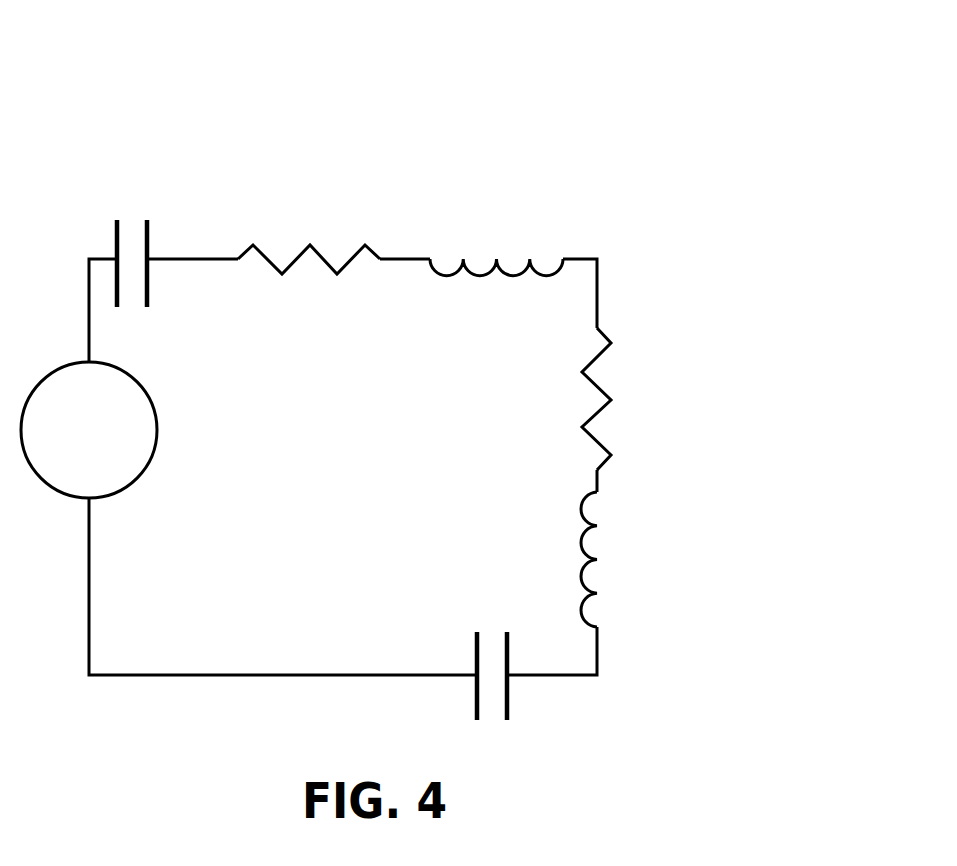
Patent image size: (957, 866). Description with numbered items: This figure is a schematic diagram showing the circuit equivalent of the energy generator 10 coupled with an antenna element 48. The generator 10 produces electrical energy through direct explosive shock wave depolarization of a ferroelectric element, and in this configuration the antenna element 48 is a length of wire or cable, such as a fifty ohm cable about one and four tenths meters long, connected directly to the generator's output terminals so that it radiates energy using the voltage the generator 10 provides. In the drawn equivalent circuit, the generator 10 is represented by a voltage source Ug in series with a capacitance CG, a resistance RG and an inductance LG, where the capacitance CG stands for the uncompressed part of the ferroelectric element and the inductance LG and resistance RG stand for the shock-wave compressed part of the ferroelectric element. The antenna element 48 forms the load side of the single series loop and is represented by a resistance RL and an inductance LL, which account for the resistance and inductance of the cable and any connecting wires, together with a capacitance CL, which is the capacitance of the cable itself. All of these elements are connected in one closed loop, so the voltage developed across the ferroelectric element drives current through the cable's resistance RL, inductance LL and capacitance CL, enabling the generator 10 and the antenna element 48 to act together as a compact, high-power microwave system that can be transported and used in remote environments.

The energy generator 10 is at (437, 104).
The antenna element 48 is at (726, 459).
The RF generator voltage source Ug is at (89, 430).
The capacitance of the uncompressed part of the ferroelectric element CG is at (133, 233).
The resistance of the shock-wave compressed part of the ferroelectric element RG is at (309, 231).
The inductance of the shock-wave compressed part of the ferroelectric element LG is at (496, 232).
The resistance of the cable and connecting wires RL is at (627, 399).
The inductance of the cable and connecting wires LL is at (627, 559).
The capacitance of the cable CL is at (489, 636).